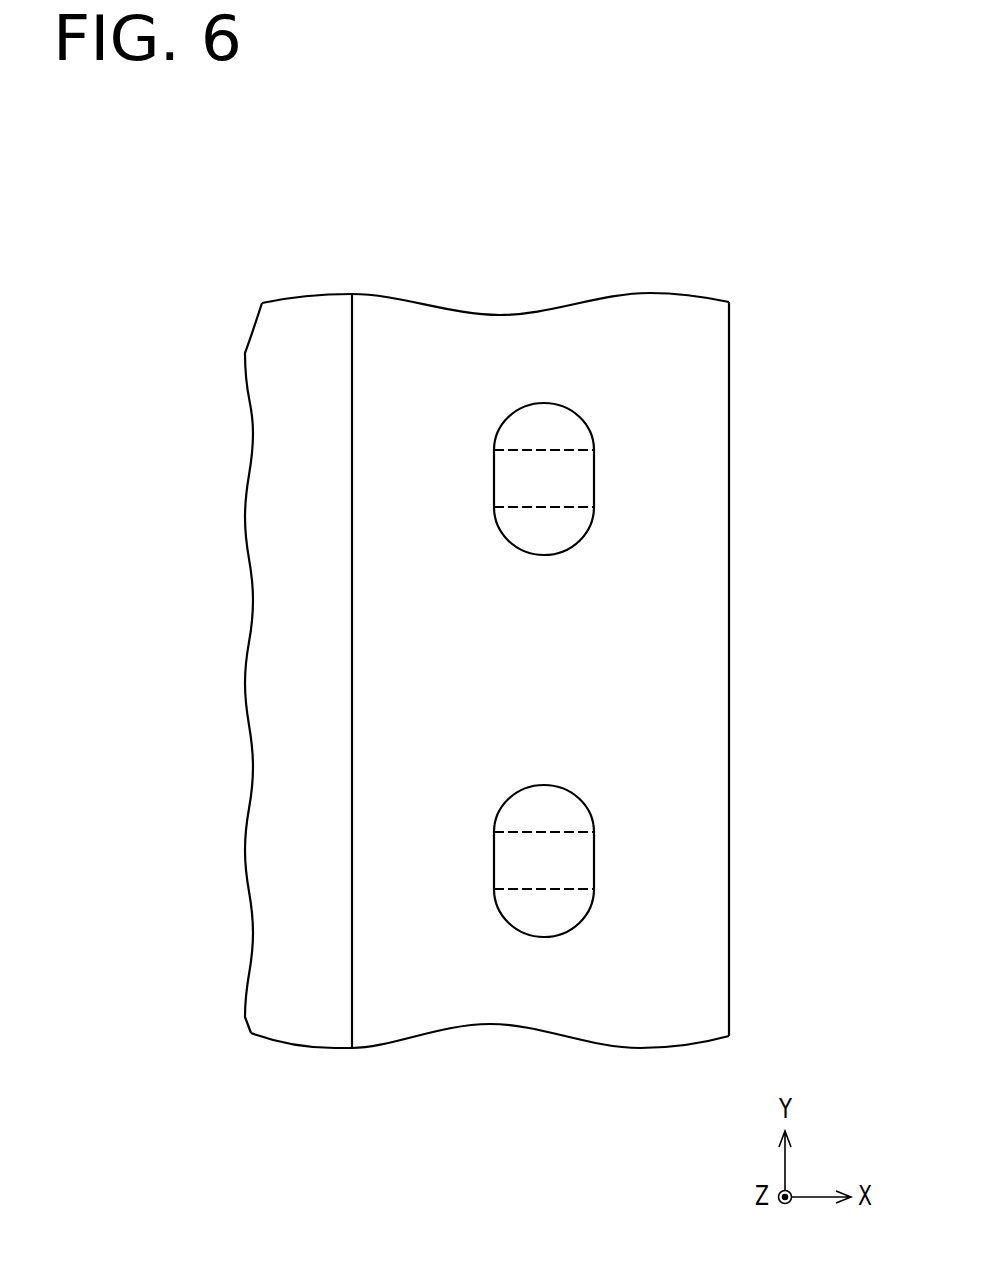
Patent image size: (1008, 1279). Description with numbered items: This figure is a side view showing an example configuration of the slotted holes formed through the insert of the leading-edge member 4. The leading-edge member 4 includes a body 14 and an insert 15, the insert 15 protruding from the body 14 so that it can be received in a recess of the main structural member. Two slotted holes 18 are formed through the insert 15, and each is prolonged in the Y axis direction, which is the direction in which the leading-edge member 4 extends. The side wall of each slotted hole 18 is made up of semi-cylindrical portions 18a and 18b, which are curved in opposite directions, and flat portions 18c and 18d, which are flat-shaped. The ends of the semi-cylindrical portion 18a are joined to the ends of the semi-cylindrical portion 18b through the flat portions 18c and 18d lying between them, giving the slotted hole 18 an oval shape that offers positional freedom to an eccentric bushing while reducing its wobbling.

The leading-edge member 4 is at (672, 238).
The body 14 is at (290, 317).
The insert 15 is at (718, 355).
The slotted hole 18 is at (572, 410).
The semi-cylindrical portion 18a is at (501, 434).
The semi-cylindrical portion 18b is at (500, 533).
The flat portion 18c is at (494, 478).
The flat portion 18d is at (594, 478).